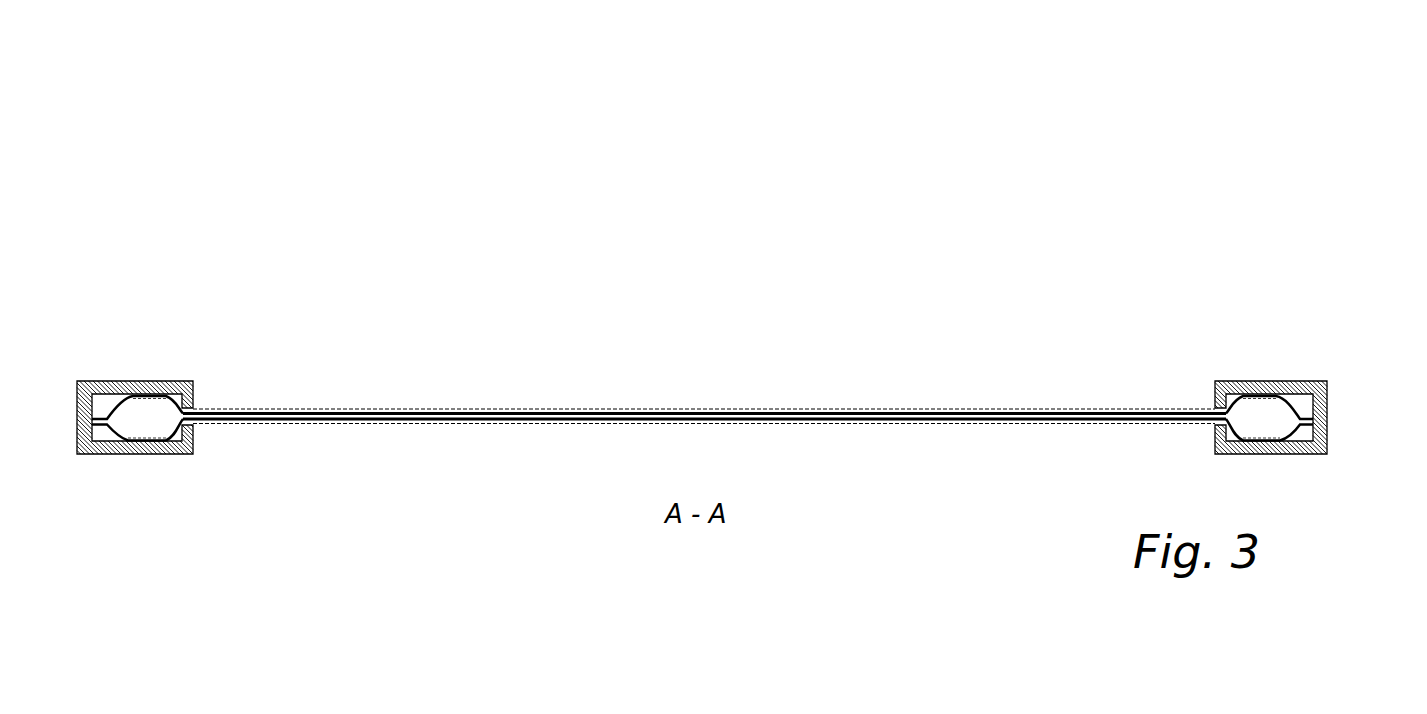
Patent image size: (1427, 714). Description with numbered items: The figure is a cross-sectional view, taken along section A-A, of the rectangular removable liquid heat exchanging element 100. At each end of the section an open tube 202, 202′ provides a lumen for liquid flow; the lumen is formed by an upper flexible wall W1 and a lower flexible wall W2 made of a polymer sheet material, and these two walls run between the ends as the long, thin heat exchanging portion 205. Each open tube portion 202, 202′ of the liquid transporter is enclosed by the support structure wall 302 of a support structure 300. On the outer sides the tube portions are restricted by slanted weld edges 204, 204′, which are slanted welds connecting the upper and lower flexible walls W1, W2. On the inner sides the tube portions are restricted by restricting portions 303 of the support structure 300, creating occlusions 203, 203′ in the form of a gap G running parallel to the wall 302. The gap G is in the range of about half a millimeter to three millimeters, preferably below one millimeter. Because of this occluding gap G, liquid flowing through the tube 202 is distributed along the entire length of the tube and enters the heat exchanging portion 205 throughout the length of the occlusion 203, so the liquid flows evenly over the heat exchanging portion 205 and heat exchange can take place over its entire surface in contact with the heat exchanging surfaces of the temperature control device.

The removable liquid heat exchanging element 100 is at (372, 157).
The support structure 300 is at (133, 330).
The support structure wall 302 is at (77, 403).
The restricting portion 303 is at (182, 403).
The open tube 202 is at (1265, 417).
The open tube portion 202′ is at (152, 413).
The occlusion 203 is at (1220, 417).
The occlusion 203′ is at (192, 417).
The slanted weld edge 204 is at (1308, 427).
The slanted weld edge 204′ is at (100, 423).
The heat exchanging portion 205 is at (642, 408).
The gap G is at (204, 440).
The upper flexible wall W1 is at (857, 408).
The lower flexible wall W2 is at (872, 424).